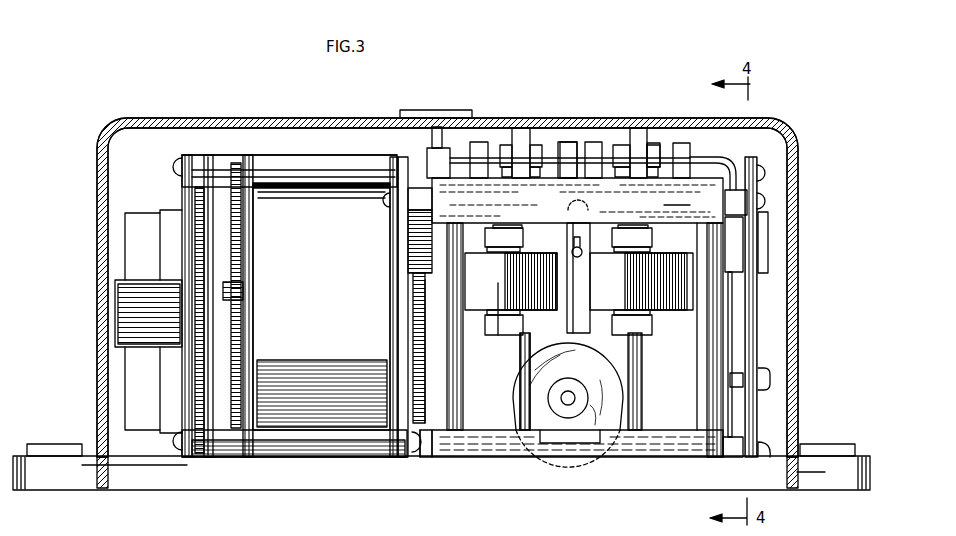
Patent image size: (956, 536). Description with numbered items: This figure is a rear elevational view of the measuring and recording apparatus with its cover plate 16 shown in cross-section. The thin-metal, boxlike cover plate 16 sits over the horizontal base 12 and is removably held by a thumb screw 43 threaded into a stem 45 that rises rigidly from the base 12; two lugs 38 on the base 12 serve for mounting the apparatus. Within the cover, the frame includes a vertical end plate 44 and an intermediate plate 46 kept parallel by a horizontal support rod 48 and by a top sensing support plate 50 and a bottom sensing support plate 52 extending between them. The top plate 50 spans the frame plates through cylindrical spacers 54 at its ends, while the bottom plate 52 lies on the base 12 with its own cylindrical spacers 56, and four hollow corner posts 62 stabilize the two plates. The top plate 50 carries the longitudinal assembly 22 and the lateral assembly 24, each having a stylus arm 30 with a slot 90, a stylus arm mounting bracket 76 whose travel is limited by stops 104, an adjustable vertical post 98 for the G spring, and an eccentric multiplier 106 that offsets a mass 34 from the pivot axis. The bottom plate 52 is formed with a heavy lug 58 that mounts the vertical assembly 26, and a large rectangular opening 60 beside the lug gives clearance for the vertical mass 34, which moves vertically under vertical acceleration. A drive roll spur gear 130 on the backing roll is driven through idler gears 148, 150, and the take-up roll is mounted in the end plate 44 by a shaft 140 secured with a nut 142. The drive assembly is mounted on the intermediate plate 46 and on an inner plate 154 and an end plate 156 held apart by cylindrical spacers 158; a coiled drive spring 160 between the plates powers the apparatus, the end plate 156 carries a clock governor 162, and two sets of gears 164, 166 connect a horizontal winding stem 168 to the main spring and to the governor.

The base 12 is at (186, 480).
The cover plate 16 is at (110, 122).
The longitudinal assembly 22 is at (508, 132).
The lateral assembly 24 is at (658, 138).
The vertical assembly 26 is at (529, 421).
The stylus arm 30 is at (587, 228).
The mass 34 is at (522, 397).
The lugs 38 is at (55, 480).
The thumb screw 43 is at (423, 111).
The end plate 44 is at (753, 413).
The stem 45 is at (447, 162).
The intermediate plate 46 is at (397, 162).
The horizontal support rod 48 is at (737, 162).
The top sensing support plate 50 is at (677, 198).
The bottom sensing support plate 52 is at (668, 437).
The cylindrical spacers 54 is at (432, 198).
The cylindrical spacers 56 is at (423, 450).
The lug 58 is at (628, 352).
The rectangular opening 60 is at (647, 440).
The corner posts 62 is at (462, 407).
The stylus arm mounting bracket 76 is at (540, 150).
The slot 90 is at (571, 244).
The adjustable vertical post 98 is at (527, 140).
The stops 104 is at (592, 142).
The eccentric multiplier 106 is at (502, 235).
The drive roll spur gear 130 is at (407, 229).
The shaft 140 is at (737, 375).
The nut 142 is at (765, 372).
The idler gear 148 is at (413, 317).
The idler gear 150 is at (403, 385).
The inner plate 154 is at (249, 213).
The end plate 156 is at (182, 157).
The cylindrical spacers 158 is at (280, 157).
The coiled drive spring 160 is at (336, 289).
The clock governor 162 is at (140, 223).
The set of gears 164 is at (241, 242).
The set of gears 166 is at (208, 170).
The winding stem 168 is at (112, 305).